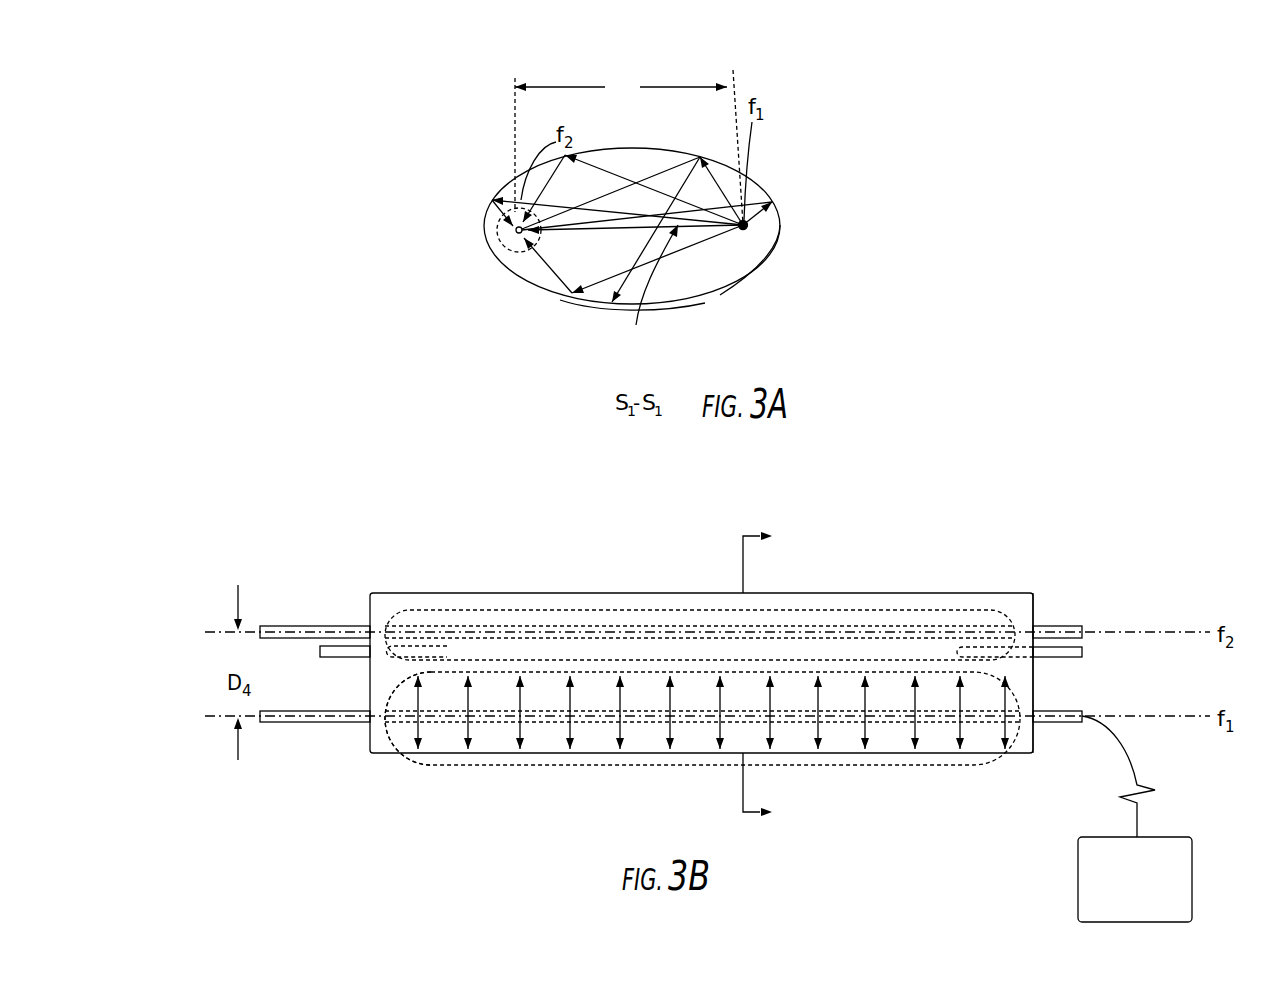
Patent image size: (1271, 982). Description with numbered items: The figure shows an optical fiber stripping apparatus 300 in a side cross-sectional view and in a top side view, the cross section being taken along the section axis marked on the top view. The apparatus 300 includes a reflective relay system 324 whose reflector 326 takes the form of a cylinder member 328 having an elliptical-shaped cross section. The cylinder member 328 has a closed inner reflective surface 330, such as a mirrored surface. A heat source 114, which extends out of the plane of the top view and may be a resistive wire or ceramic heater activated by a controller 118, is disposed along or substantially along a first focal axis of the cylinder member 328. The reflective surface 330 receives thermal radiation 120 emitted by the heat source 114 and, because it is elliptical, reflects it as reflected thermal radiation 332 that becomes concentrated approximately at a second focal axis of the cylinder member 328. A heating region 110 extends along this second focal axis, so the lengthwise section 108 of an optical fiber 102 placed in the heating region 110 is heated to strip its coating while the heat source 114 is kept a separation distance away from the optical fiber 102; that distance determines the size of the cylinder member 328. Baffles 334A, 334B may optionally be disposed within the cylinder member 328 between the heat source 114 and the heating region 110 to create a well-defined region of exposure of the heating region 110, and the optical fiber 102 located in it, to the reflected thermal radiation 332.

In FIG. 3A, the optical fiber stripping apparatus 300 is at (697, 50).
In FIG. 3B, the optical fiber stripping apparatus 300 is at (1025, 540).
In FIG. 3A, the reflective relay system 324 is at (826, 110).
In FIG. 3A, the reflector 326 is at (712, 305).
In FIG. 3B, the reflector 326 is at (415, 590).
In FIG. 3A, the cylinder member 328 is at (757, 267).
In FIG. 3B, the cylinder member 328 is at (482, 593).
In FIG. 3A, the inner reflective surface 330 is at (609, 302).
In FIG. 3B, the inner reflective surface 330 is at (978, 596).
In FIG. 3A, the reflected thermal radiation 332 is at (507, 257).
In FIG. 3B, the reflected thermal radiation 332 is at (378, 693).
In FIG. 3A, the optical fiber 102 is at (506, 227).
In FIG. 3B, the optical fiber 102 is at (1050, 628).
In FIG. 3A, the lengthwise section 108 is at (508, 217).
In FIG. 3B, the lengthwise section 108 is at (840, 626).
In FIG. 3A, the heating region 110 is at (500, 243).
In FIG. 3B, the heating region 110 is at (565, 605).
In FIG. 3A, the heat source 114 is at (766, 208).
In FIG. 3B, the heat source 114 is at (922, 722).
In FIG. 3B, the controller 118 is at (1150, 902).
In FIG. 3A, the thermal radiation 120 is at (646, 289).
In FIG. 3B, the thermal radiation 120 is at (507, 765).
In FIG. 3B, the baffle 334A is at (348, 657).
In FIG. 3B, the baffle 334B is at (1060, 658).